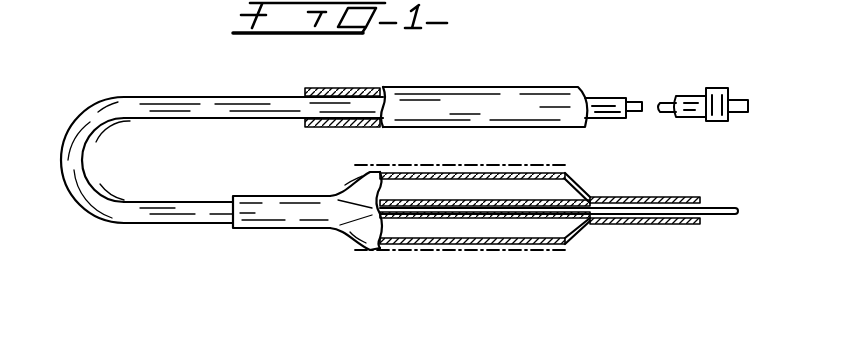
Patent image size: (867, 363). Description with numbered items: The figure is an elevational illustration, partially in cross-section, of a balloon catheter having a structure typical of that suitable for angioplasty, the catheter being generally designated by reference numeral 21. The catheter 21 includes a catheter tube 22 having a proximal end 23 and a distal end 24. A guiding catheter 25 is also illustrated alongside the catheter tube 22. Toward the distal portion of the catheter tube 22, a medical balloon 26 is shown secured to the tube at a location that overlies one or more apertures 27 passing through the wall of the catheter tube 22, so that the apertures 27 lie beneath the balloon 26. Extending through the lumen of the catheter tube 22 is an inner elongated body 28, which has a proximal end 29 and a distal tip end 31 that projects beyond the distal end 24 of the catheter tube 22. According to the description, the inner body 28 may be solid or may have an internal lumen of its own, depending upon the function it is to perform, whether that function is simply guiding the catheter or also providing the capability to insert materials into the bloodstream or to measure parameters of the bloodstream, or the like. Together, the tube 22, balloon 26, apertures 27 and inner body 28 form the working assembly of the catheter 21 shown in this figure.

The catheter 21 is at (179, 75).
The catheter tube 22 is at (176, 200).
The proximal end 23 is at (690, 98).
The distal end 24 is at (696, 224).
The guiding catheter 25 is at (478, 87).
The medical balloon 26 is at (356, 226).
The apertures 27 is at (487, 226).
The inner elongated body 28 is at (638, 100).
The proximal end 29 is at (738, 100).
The distal tip end 31 is at (728, 214).